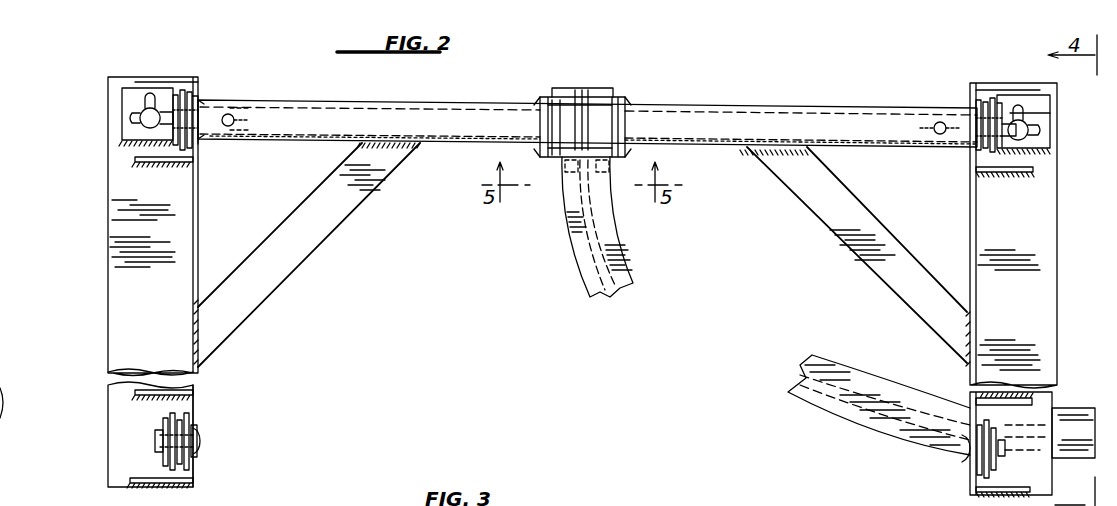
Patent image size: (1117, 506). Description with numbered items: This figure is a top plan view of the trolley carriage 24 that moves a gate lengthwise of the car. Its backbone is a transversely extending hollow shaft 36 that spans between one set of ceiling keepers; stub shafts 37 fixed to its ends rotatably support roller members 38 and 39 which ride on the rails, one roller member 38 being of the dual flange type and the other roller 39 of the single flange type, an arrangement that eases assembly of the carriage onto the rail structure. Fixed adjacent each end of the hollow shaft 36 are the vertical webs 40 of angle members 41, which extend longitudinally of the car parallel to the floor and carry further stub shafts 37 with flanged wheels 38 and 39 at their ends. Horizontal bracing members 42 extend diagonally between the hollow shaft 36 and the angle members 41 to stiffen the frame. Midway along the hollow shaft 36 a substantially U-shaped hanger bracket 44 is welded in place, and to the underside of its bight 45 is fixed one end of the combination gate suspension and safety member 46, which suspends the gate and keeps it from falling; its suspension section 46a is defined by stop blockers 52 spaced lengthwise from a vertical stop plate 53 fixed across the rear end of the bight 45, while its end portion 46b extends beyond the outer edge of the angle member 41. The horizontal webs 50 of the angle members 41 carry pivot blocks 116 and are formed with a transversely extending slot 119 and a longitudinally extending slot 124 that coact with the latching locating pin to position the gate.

The trolley carriage 24 is at (691, 101).
The hollow shaft 36 is at (780, 107).
The stub shaft 37 is at (256, 140).
The roller member 38 is at (178, 96).
The roller member 39 is at (985, 100).
The vertical web 40 is at (195, 236).
The angle member 41 is at (108, 299).
The horizontal bracing member 42 is at (303, 212).
The hanger bracket 44 is at (628, 100).
The bight 45 is at (553, 98).
The combination gate suspension and safety member 46 is at (854, 444).
The suspension section 46a is at (615, 155).
The end portion 46b is at (1087, 406).
The horizontal web 50 is at (130, 244).
The stop blocker 52 is at (565, 172).
The vertical stop plate 53 is at (601, 88).
The pivot block 116 is at (1055, 153).
The transversely extending slot 119 is at (1030, 136).
The longitudinally extending slot 124 is at (1050, 113).